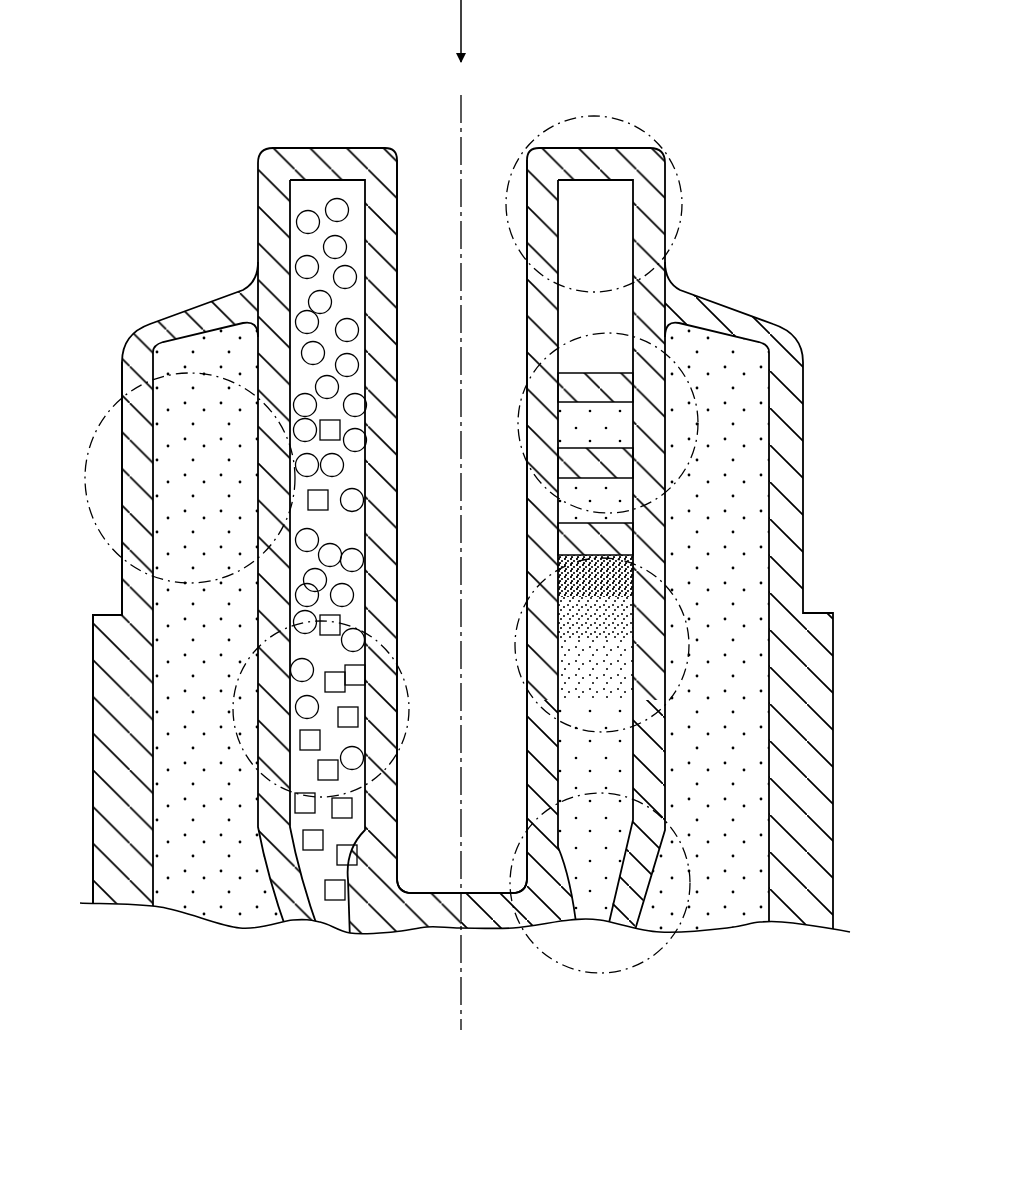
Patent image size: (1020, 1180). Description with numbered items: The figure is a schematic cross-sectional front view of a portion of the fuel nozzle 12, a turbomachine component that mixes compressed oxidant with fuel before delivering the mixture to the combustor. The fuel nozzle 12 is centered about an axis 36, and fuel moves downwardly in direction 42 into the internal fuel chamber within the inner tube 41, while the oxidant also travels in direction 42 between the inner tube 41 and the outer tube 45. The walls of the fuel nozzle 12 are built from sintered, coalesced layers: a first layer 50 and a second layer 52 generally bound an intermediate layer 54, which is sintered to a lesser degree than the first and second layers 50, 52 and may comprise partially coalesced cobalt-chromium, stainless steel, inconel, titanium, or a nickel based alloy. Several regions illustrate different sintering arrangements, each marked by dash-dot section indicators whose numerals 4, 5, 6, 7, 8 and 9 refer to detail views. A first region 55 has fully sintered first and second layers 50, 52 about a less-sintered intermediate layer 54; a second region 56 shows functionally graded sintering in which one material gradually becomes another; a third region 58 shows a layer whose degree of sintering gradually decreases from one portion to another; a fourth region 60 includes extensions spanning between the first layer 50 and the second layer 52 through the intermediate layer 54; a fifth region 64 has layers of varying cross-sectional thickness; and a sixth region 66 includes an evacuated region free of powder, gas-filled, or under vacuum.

The fuel nozzle 12 is at (714, 66).
The axis 36 is at (464, 127).
The inner tube 41 is at (296, 106).
The direction 42 is at (462, 20).
The outer tube 45 is at (105, 610).
The first layer 50 is at (543, 203).
The second layer 52 is at (258, 447).
The intermediate layer 54 is at (222, 769).
The first region 55 is at (90, 460).
The second region 56 is at (370, 787).
The third region 58 is at (523, 594).
The fourth region 60 is at (572, 340).
The fifth region 64 is at (642, 958).
The sixth region 66 is at (672, 152).
The section line 4- 4 is at (118, 398).
The section line 5- 5 is at (525, 823).
The section line 6- 6 is at (527, 588).
The section line 7- 7 is at (365, 628).
The section line 8- 8 is at (538, 132).
The section line 9- 9 is at (530, 357).